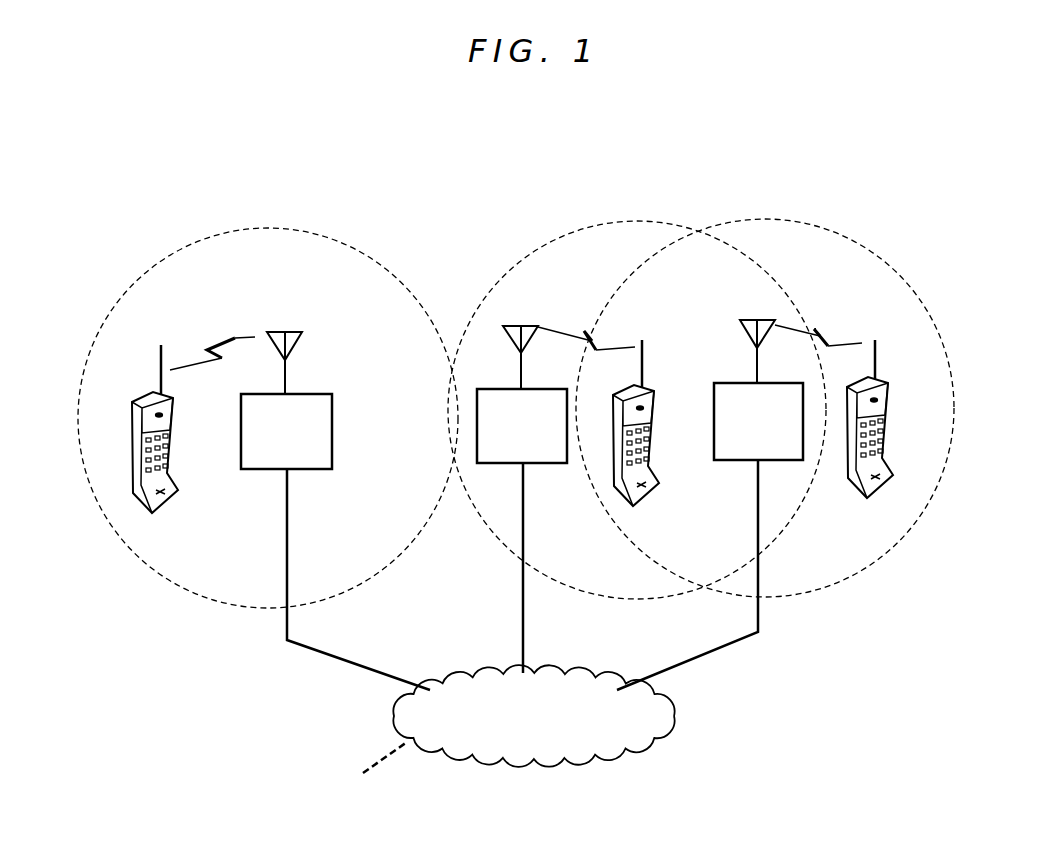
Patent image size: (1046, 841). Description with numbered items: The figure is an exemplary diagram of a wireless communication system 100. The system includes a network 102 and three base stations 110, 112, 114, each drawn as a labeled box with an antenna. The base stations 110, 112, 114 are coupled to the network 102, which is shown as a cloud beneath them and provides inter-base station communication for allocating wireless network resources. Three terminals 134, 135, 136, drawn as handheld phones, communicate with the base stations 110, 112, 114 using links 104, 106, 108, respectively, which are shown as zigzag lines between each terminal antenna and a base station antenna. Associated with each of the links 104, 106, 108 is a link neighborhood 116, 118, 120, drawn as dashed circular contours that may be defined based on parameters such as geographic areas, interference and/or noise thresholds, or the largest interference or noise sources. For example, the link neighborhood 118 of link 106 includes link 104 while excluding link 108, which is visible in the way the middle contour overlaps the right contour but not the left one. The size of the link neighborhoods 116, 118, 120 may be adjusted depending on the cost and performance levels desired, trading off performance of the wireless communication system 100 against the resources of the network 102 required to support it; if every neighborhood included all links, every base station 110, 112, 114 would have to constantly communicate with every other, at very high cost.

The wireless communication system 100 is at (420, 205).
The network 102 is at (498, 678).
The link 104 is at (834, 336).
The link 106 is at (590, 338).
The link 108 is at (238, 340).
The base station 110 is at (736, 383).
The base station 112 is at (534, 466).
The base station 114 is at (333, 434).
The link neighborhood 116 is at (766, 219).
The link neighborhood 118 is at (639, 221).
The link neighborhood 120 is at (278, 228).
The terminal 134 is at (646, 490).
The terminal 135 is at (876, 493).
The terminal 136 is at (163, 500).